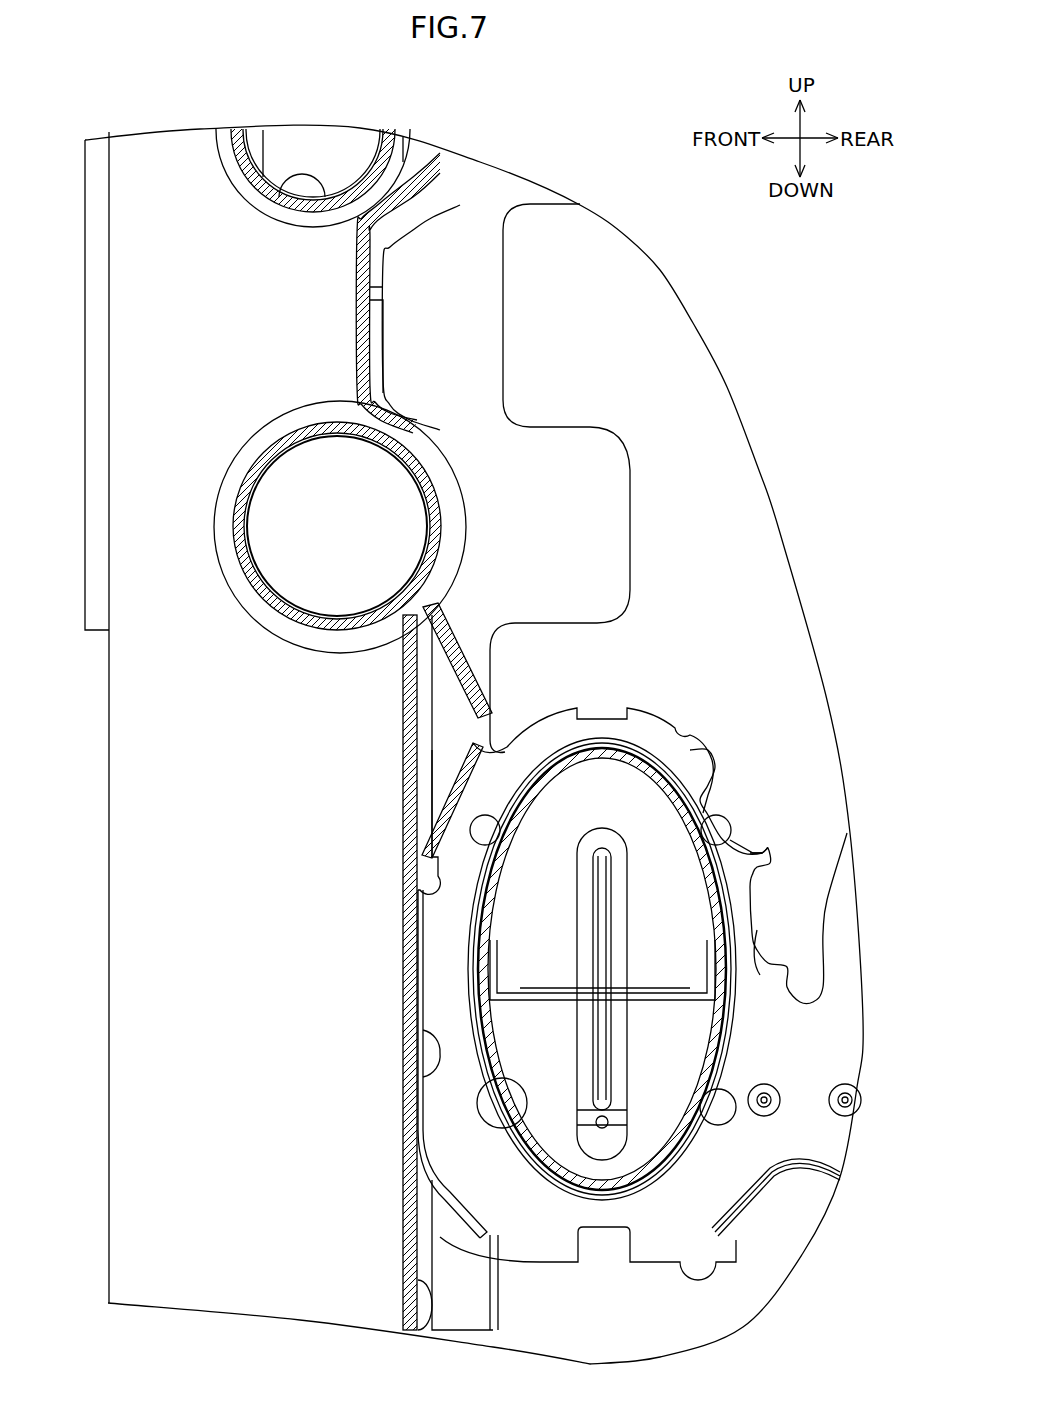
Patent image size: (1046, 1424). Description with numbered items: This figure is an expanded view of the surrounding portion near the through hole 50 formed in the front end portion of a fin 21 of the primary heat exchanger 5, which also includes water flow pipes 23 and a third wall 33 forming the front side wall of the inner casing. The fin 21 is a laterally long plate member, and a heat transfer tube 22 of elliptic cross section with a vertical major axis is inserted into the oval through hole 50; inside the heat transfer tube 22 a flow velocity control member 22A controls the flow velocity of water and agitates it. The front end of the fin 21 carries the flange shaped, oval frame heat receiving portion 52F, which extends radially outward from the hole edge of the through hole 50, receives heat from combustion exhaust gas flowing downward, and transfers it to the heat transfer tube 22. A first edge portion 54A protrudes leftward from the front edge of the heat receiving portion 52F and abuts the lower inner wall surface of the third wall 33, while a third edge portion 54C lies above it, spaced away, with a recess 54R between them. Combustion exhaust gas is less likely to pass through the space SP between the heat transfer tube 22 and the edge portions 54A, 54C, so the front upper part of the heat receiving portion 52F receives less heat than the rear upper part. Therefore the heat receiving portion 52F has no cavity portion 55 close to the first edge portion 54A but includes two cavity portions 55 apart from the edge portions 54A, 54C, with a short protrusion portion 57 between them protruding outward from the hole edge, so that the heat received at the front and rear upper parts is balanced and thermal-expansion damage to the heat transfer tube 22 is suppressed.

The primary heat exchanger 5 is at (592, 134).
The fin 21 is at (629, 692).
The heat transfer tube 22 is at (470, 1080).
The flow velocity control member 22A is at (618, 1048).
The water flow pipe 23 is at (262, 190).
The third wall 33 is at (432, 757).
The through hole 50 is at (513, 1143).
The heat receiving portion 52F is at (647, 735).
The first edge portion 54A is at (440, 1077).
The third edge portion 54C is at (443, 813).
The recess 54R is at (427, 890).
The cavity portion 55 is at (712, 787).
The protrusion portion 57 is at (762, 853).
The space SP is at (456, 877).